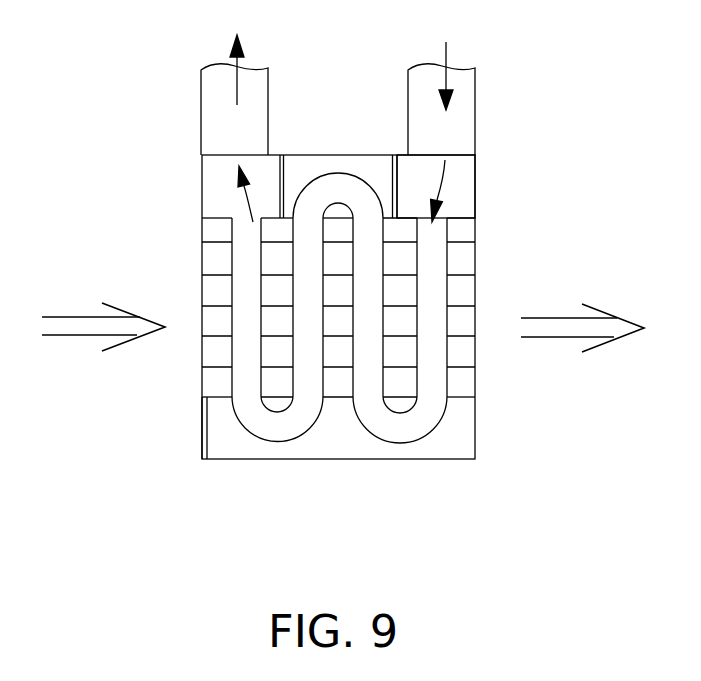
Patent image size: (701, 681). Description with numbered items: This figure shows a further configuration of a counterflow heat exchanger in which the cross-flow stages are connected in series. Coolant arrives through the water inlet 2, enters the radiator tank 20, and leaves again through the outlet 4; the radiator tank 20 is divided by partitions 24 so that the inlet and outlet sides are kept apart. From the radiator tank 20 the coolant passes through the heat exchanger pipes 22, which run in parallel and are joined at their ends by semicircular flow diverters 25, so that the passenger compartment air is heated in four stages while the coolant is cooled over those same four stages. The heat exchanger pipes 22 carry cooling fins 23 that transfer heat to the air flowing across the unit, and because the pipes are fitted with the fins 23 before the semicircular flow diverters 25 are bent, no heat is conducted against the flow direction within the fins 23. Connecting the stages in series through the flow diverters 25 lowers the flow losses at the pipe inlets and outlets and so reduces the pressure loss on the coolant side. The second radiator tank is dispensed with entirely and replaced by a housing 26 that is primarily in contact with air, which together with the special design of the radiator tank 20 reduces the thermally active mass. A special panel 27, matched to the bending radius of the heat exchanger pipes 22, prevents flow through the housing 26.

The water inlet 2 is at (475, 100).
The outlet 4 is at (268, 104).
The radiator tank 20 is at (475, 186).
The heat exchanger pipes 22 is at (447, 230).
The cooling fins 23 is at (465, 260).
The partitions 24 is at (394, 177).
The semicircular flow diverters 25 is at (373, 438).
The housing 26 is at (428, 460).
The panel 27 is at (203, 418).